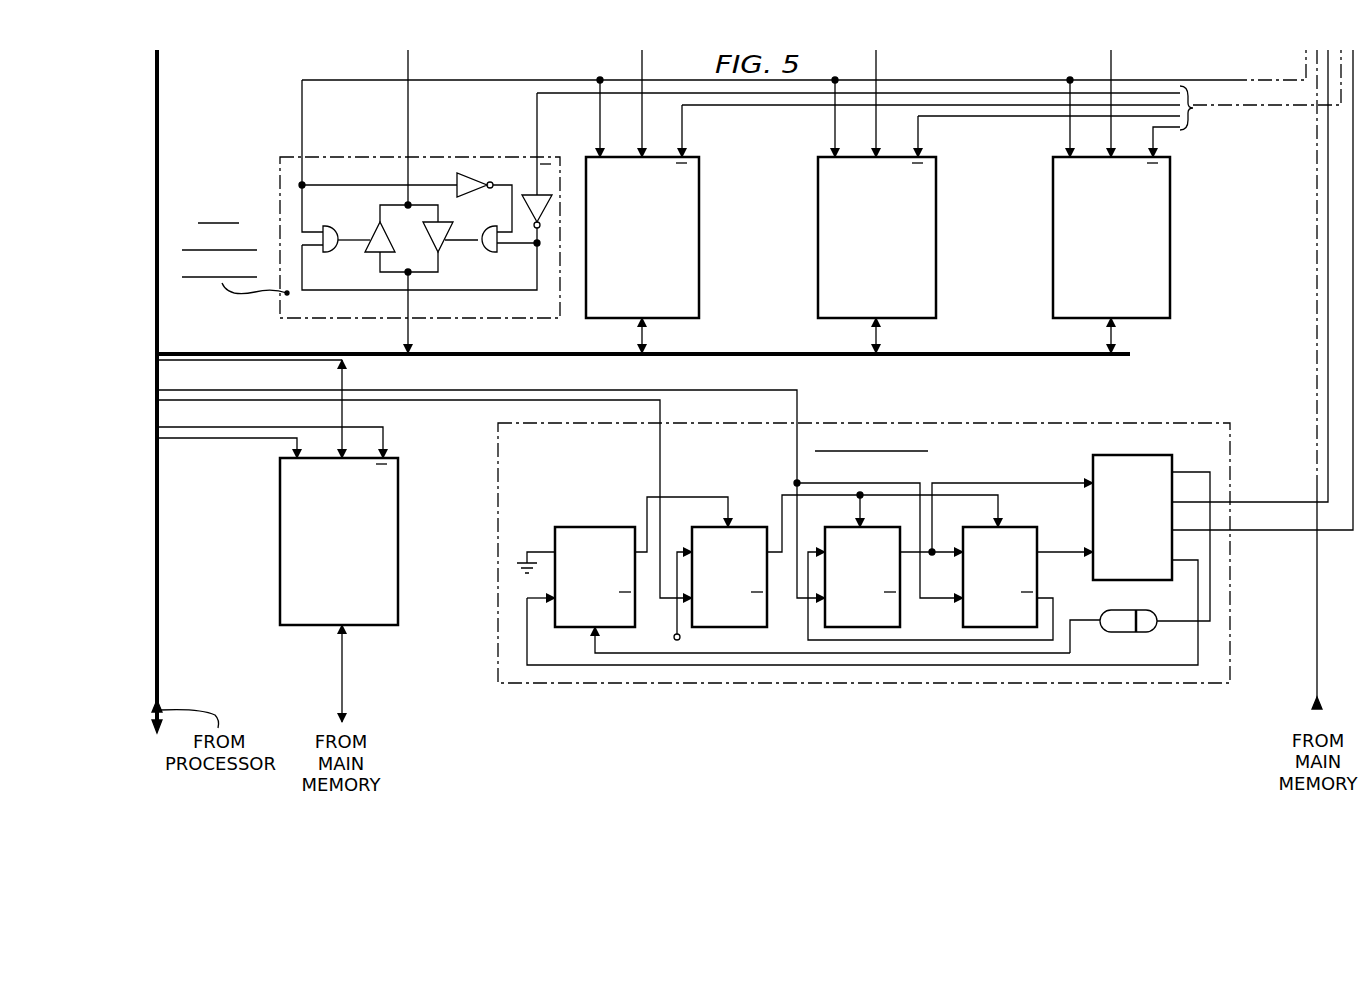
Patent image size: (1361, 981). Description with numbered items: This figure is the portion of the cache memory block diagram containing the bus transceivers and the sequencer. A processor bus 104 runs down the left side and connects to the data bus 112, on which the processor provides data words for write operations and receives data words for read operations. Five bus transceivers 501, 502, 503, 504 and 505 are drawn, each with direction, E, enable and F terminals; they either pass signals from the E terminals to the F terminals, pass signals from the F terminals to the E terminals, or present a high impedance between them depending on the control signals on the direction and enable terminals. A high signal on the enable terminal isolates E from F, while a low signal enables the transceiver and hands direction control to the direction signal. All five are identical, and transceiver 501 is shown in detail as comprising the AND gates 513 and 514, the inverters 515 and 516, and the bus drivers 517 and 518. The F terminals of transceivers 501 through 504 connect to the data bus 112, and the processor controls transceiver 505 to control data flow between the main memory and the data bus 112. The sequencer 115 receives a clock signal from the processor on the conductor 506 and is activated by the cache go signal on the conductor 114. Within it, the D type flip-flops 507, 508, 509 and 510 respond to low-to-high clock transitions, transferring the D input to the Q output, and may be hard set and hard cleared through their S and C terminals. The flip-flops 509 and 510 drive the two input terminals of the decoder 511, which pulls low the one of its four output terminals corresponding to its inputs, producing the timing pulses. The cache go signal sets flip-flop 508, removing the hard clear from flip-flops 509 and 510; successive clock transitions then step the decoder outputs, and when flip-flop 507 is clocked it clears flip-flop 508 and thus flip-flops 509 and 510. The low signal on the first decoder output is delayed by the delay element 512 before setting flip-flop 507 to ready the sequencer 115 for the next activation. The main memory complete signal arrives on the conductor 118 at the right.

The processor bus 104 is at (160, 652).
The data bus 112 is at (247, 352).
The conductor 114 is at (437, 400).
The sequencer 115 is at (880, 423).
The conductor 118 is at (1317, 608).
The bus transceiver 501 is at (370, 205).
The bus transceiver 502 is at (699, 235).
The bus transceiver 503 is at (936, 235).
The bus transceiver 504 is at (1170, 235).
The bus transceiver 505 is at (280, 549).
The conductor 506 is at (437, 390).
The D type flip-flop 507 is at (574, 527).
The D type flip-flop 508 is at (711, 527).
The D type flip-flop 509 is at (845, 527).
The D type flip-flop 510 is at (981, 527).
The decoder 511 is at (1140, 455).
The delay element 512 is at (1135, 610).
The AND gate 513 is at (352, 217).
The AND gate 514 is at (486, 253).
The inverter 515 is at (478, 184).
The inverter 516 is at (522, 203).
The bus driver 517 is at (368, 253).
The bus driver 518 is at (440, 245).